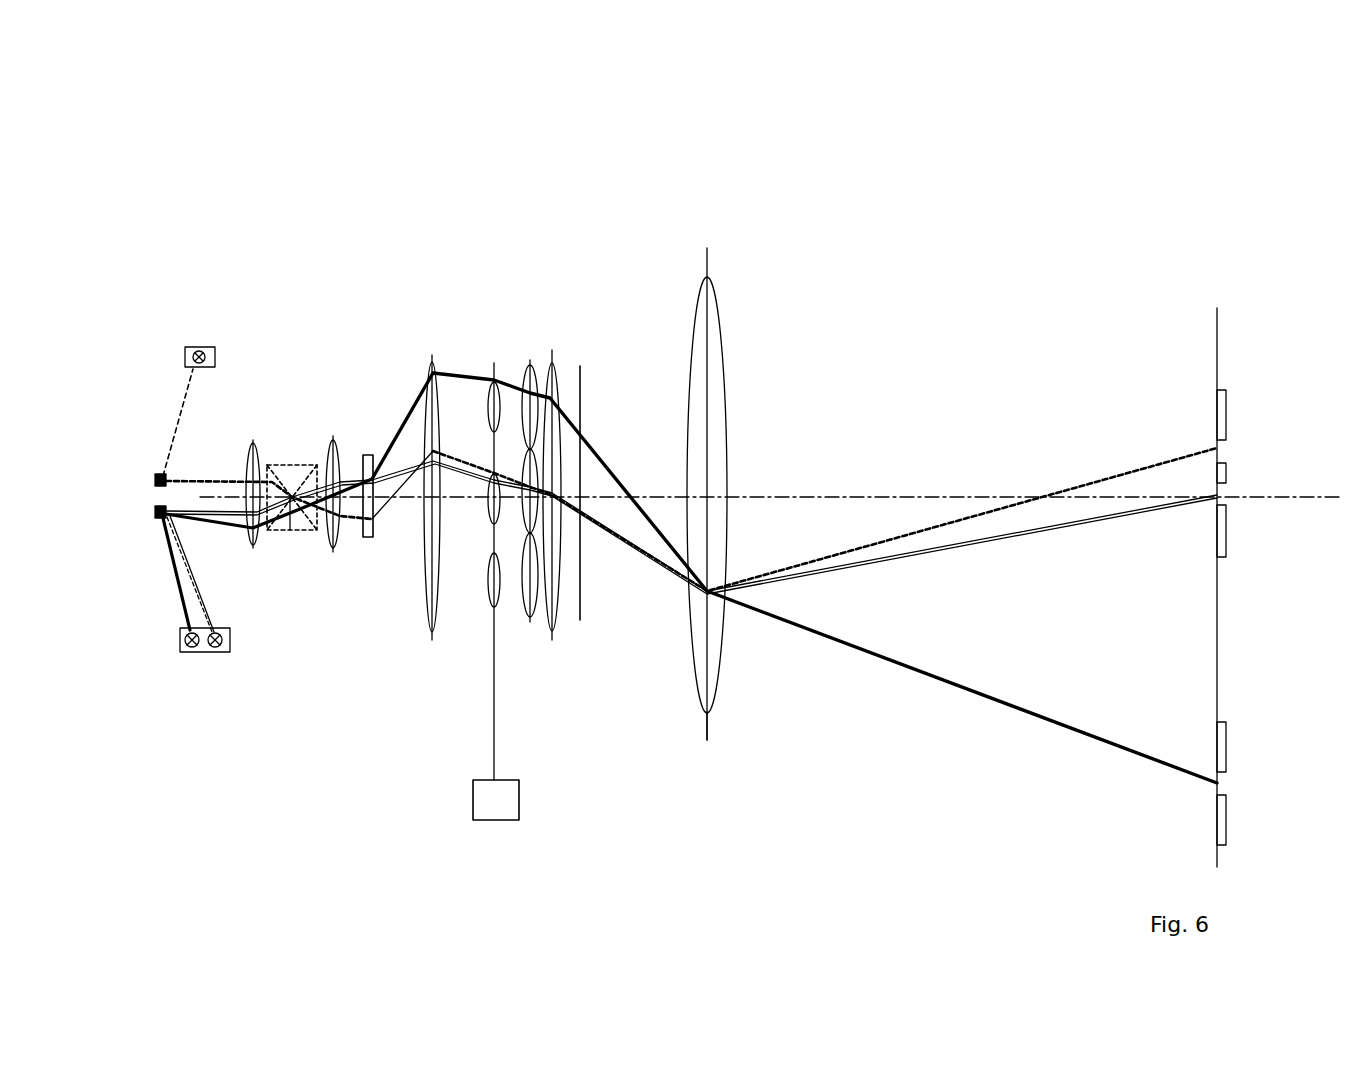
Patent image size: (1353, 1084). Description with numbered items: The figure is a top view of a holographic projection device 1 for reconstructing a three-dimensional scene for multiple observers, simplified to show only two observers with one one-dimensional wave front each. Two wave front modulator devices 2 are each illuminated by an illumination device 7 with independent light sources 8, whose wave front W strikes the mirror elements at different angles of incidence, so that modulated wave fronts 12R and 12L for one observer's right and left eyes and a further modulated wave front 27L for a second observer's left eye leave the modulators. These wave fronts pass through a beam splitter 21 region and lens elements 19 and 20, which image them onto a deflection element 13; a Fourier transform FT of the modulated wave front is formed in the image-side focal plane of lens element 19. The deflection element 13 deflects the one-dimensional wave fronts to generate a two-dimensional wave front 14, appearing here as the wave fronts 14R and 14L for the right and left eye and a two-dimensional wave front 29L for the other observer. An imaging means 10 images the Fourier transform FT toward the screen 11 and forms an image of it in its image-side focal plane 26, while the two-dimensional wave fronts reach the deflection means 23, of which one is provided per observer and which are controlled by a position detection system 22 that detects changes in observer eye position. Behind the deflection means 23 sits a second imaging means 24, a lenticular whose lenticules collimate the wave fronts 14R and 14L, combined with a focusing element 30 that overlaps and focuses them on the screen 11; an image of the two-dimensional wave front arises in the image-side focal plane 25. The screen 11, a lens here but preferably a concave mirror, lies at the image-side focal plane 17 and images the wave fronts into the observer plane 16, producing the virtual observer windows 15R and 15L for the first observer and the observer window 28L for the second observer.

The holographic projection device 1 is at (362, 127).
The wave front modulator device 2 is at (157, 474).
The illumination device 7 is at (190, 347).
The light source 8 is at (204, 349).
The wave front W is at (182, 418).
The modulated wave front for right eye 12R is at (195, 479).
The modulated wave front for left eye 12L is at (198, 516).
The modulated wave front for second observer's left eye 27L is at (236, 531).
The lens element 19 is at (253, 443).
The lens element 20 is at (331, 441).
The beam splitter 21 is at (285, 466).
The Fourier transform FT is at (290, 530).
The deflection element 13 is at (364, 538).
The two-dimensional wave front 14 is at (360, 393).
The wave front for left eye 14L is at (388, 448).
The wave front for right eye 14R is at (393, 458).
The imaging means 10 is at (432, 607).
The two-dimensional wave front 29L is at (405, 360).
The deflection means 23 is at (493, 363).
The image-side focal plane of the imaging means 26 is at (497, 582).
The second imaging means 24 is at (535, 614).
The focusing element 30 is at (551, 365).
The image-side focal plane of the second imaging means 25 is at (581, 618).
The position detection system 22 is at (496, 800).
The screen 11 is at (700, 305).
The image-side focal plane 17 is at (711, 730).
The observer plane 16 is at (1216, 861).
The observer window for right eye 15R is at (1220, 448).
The observer window for left eye 15L is at (1220, 495).
The observer window for left eye of second observer 28L is at (1222, 781).